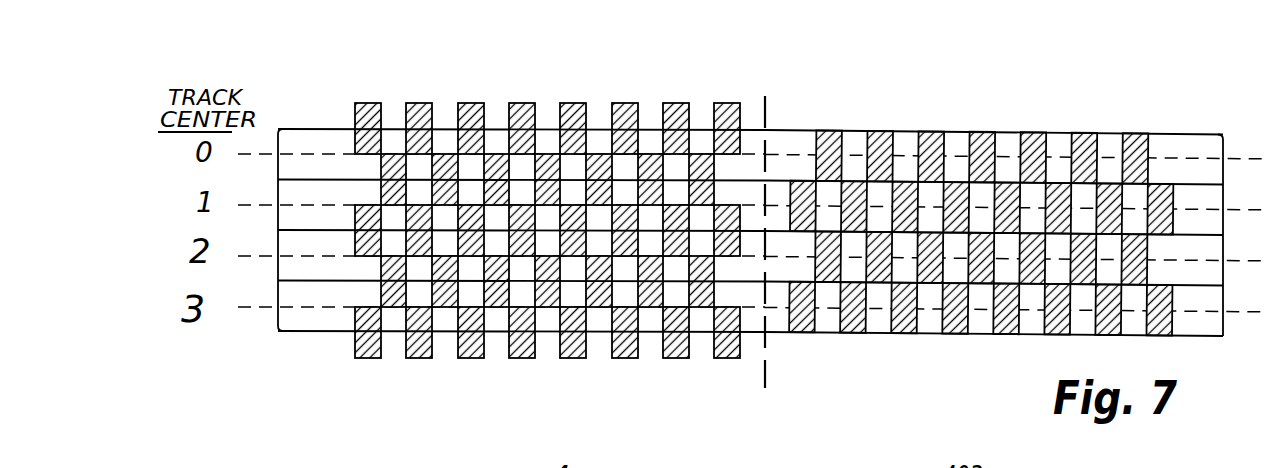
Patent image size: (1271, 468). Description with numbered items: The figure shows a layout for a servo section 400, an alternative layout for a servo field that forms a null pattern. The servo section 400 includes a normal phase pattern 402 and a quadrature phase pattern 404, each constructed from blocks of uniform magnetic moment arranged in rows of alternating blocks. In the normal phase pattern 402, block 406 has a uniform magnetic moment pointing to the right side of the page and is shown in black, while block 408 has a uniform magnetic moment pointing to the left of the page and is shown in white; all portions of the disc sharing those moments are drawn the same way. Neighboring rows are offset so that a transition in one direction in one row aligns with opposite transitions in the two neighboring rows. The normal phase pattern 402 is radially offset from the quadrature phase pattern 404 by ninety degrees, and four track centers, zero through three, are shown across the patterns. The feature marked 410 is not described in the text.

The servo section 400 is at (736, 261).
The normal phase pattern 402 is at (475, 285).
The quadrature phase pattern 404 is at (941, 336).
The block 406 is at (361, 357).
The block 408 is at (308, 299).
The burst boundary 410 is at (381, 293).